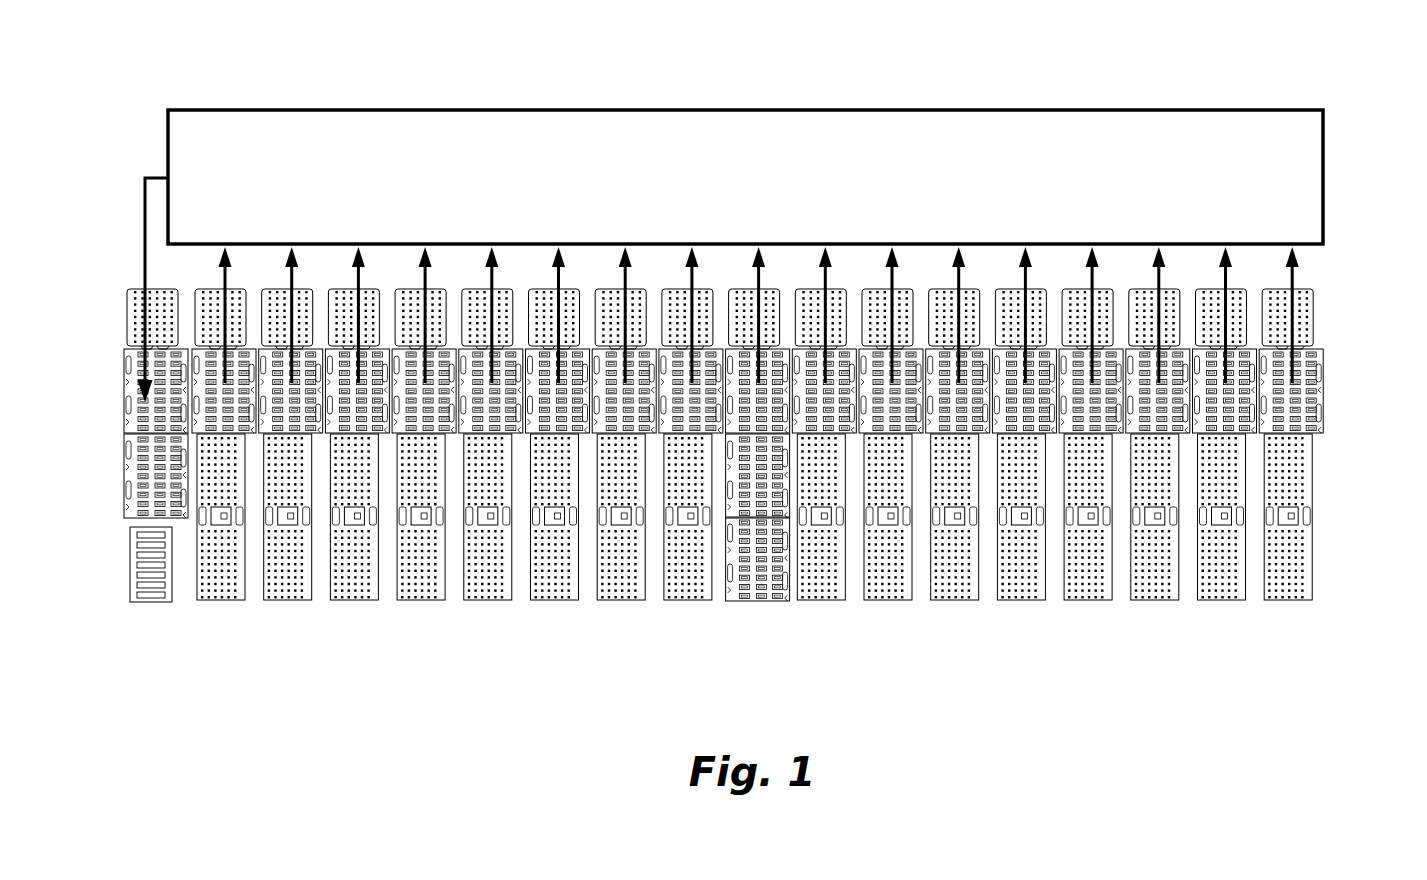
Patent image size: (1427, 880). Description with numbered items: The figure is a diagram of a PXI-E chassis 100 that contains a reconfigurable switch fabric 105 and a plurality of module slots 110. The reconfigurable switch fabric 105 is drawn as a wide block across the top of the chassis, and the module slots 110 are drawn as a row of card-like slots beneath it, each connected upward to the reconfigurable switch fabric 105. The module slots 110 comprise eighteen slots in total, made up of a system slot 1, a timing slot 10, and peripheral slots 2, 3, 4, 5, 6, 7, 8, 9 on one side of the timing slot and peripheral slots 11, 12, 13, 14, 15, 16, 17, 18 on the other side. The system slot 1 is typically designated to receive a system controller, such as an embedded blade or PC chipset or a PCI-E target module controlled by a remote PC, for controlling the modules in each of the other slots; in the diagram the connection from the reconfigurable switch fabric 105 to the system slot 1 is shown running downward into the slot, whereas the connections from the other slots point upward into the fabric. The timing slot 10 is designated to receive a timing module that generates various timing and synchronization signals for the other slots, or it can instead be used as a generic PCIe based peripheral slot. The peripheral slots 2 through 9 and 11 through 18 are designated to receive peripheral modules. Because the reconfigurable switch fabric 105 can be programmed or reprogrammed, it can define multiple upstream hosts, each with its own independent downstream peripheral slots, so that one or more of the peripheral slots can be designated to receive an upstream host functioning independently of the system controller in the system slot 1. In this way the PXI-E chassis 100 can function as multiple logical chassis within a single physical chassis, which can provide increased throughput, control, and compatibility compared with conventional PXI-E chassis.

The PXI-E chassis 100 is at (755, 51).
The reconfigurable switch fabric 105 is at (1345, 110).
The module slots 110 is at (1340, 288).
The system slot 1 is at (156, 408).
The peripheral slot 2 is at (224, 442).
The peripheral slot 3 is at (291, 442).
The peripheral slot 4 is at (357, 442).
The peripheral slot 5 is at (424, 442).
The peripheral slot 6 is at (491, 442).
The peripheral slot 7 is at (558, 442).
The peripheral slot 8 is at (624, 442).
The peripheral slot 9 is at (691, 442).
The timing slot 10 is at (758, 442).
The peripheral slot 11 is at (824, 442).
The peripheral slot 12 is at (891, 442).
The peripheral slot 13 is at (958, 442).
The peripheral slot 14 is at (1024, 442).
The peripheral slot 15 is at (1091, 442).
The peripheral slot 16 is at (1158, 442).
The peripheral slot 17 is at (1225, 442).
The peripheral slot 18 is at (1291, 442).